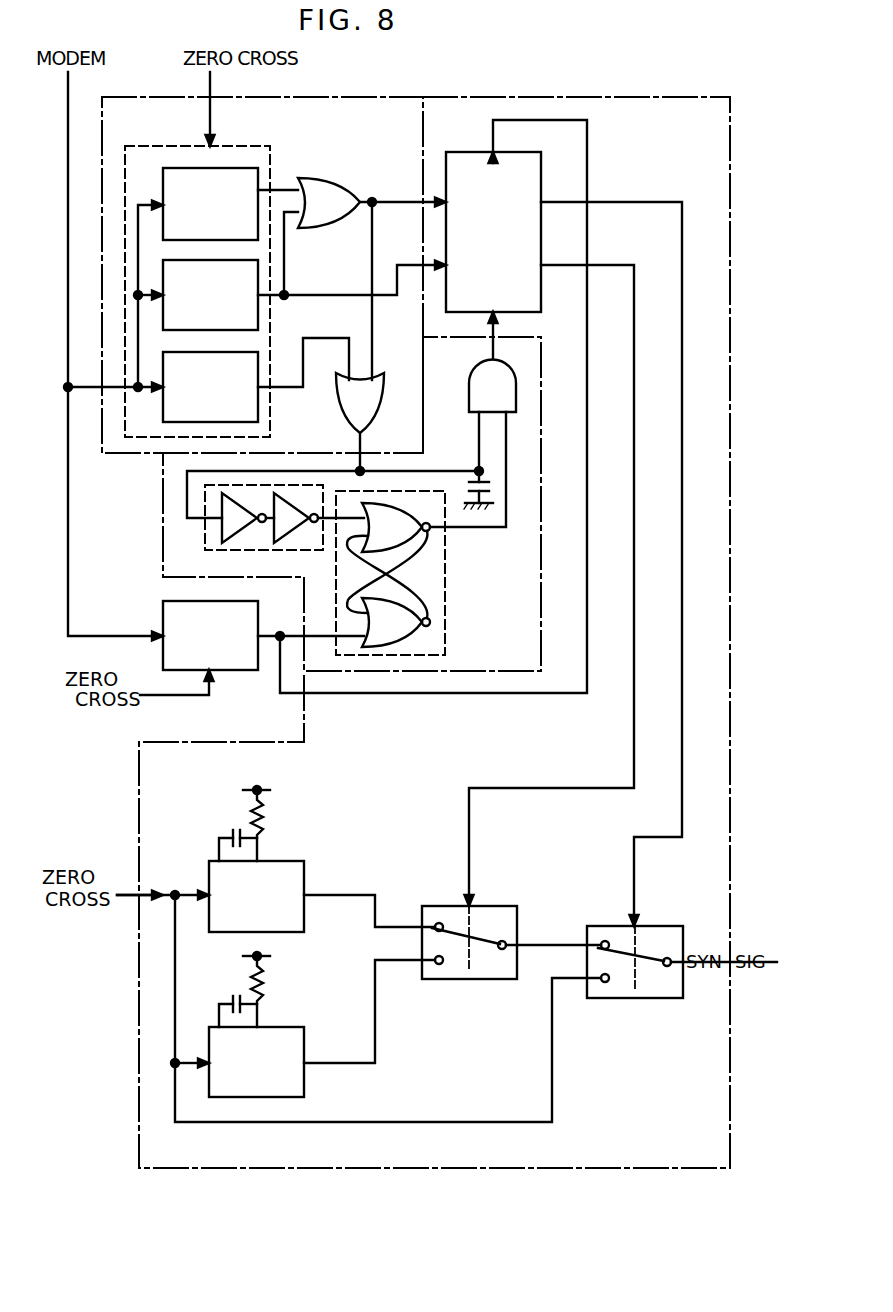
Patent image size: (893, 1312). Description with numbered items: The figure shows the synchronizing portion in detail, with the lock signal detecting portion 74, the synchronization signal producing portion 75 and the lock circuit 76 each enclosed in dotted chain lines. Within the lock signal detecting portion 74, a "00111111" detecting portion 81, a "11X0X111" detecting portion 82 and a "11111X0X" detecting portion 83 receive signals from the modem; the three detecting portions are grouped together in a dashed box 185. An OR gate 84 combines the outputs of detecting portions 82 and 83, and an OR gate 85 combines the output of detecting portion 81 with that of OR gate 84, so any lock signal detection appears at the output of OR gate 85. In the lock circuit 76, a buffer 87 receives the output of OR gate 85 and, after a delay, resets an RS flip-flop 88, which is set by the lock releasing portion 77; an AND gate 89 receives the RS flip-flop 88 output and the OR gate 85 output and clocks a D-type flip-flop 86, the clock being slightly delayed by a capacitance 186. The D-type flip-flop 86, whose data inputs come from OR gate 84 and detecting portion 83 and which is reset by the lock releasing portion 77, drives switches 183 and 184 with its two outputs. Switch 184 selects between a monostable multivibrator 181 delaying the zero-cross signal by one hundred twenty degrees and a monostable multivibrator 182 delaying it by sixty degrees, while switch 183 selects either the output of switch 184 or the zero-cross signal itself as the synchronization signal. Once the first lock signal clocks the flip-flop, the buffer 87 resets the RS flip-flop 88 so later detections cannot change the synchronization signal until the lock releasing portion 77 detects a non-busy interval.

The lock signal detecting portion 74 is at (262, 275).
The synchronization signal producing portion 75 is at (434, 632).
The lock circuit 76 is at (352, 504).
The lock releasing portion 77 is at (163, 610).
The "00111111" detecting portion 81 is at (258, 412).
The "11X0X111" detecting portion 82 is at (258, 185).
The "11111X0X" detecting portion 83 is at (258, 312).
The OR gate 84 is at (330, 222).
The OR gate 85 is at (370, 420).
The D-type flip-flop 86 is at (457, 160).
The buffer 87 is at (212, 545).
The RS flip-flop 88 is at (445, 592).
The AND gate 89 is at (470, 389).
The monostable multivibrator 181 is at (282, 864).
The monostable multivibrator 182 is at (282, 1030).
The switch 183 is at (672, 1000).
The switch 184 is at (500, 980).
The pattern detector group 185 is at (148, 140).
The capacitance 186 is at (492, 488).